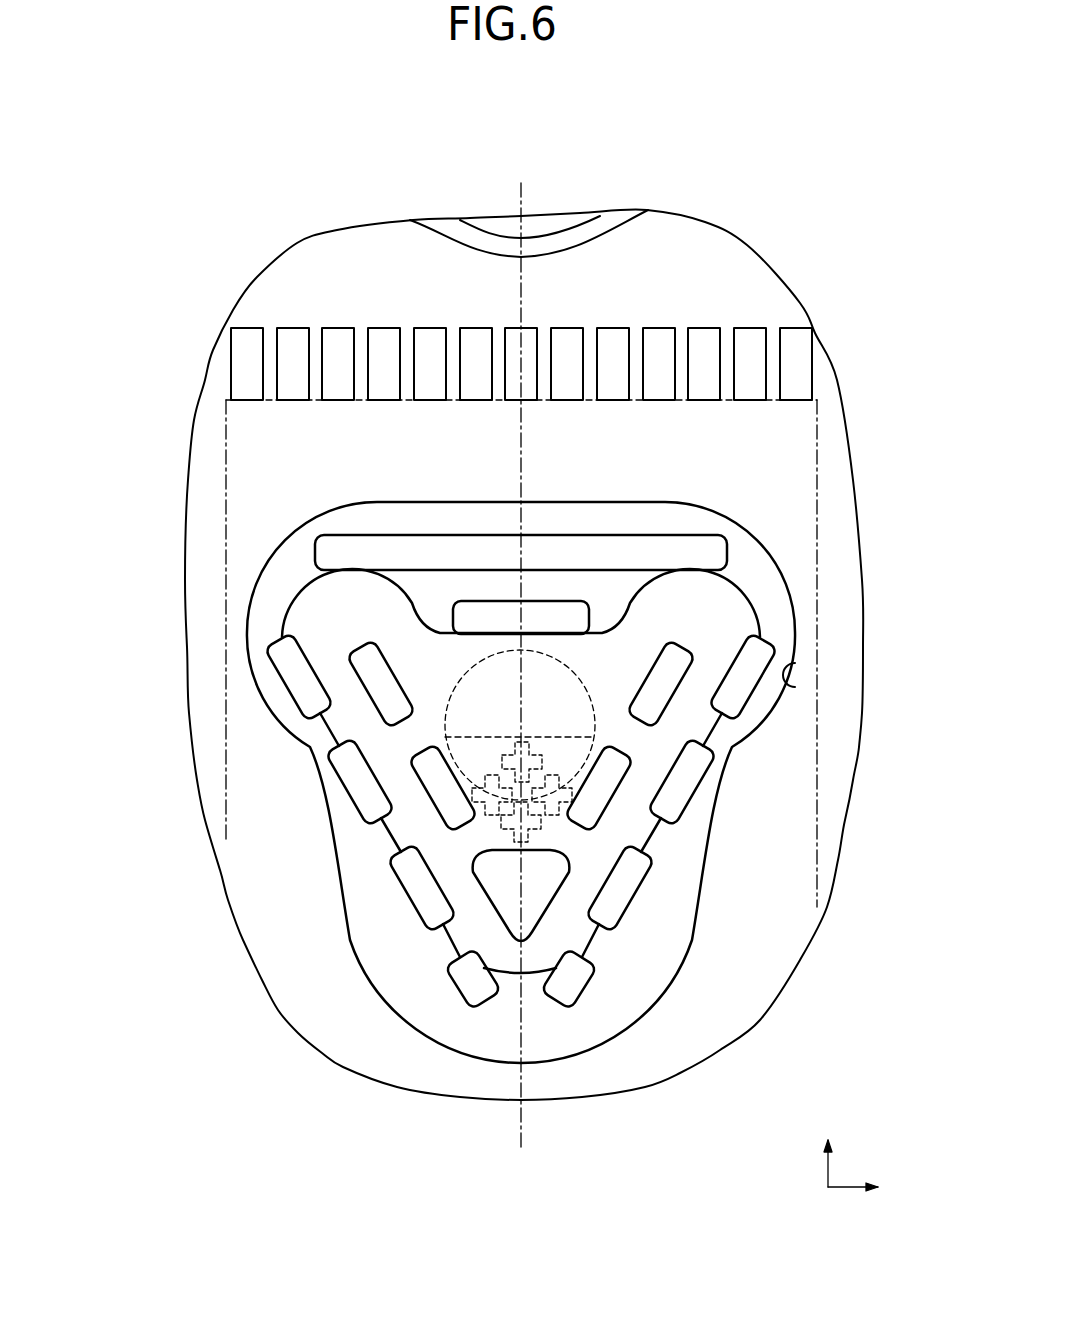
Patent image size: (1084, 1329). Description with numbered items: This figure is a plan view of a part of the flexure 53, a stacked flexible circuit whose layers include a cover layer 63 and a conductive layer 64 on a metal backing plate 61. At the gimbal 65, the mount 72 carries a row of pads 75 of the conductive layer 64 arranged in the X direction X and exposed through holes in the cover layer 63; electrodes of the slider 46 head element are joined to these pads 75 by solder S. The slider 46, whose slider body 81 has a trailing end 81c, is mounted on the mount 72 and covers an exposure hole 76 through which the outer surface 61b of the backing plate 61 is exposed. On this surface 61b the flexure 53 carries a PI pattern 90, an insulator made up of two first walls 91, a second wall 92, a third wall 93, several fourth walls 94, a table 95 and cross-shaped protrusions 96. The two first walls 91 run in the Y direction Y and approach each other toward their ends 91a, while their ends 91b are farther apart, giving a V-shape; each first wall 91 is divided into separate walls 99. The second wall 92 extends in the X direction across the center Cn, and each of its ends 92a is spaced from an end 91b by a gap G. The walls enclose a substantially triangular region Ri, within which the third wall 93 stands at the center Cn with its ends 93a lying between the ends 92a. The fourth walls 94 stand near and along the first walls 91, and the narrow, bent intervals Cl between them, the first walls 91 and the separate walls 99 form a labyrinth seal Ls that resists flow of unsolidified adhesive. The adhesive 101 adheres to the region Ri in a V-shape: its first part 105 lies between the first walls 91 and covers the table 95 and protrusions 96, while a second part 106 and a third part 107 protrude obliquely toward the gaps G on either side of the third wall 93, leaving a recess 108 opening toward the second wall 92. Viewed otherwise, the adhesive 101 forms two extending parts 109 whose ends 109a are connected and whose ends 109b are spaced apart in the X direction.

The flexure 53 is at (181, 131).
The conductive layer 64 is at (292, 345).
The pads 75 is at (522, 285).
The solder S is at (522, 285).
The trailing end 81c is at (405, 400).
The ends of the third wall 93a is at (438, 619).
The third wall 93 is at (493, 622).
The second wall 92 is at (581, 548).
The cover layer 63 is at (524, 638).
The gimbal 65 is at (524, 638).
The mount 72 is at (725, 263).
The recess 108 is at (362, 510).
The adhesive 101 is at (573, 673).
The first part 105 is at (505, 838).
The region Ri is at (431, 696).
The end of the second wall 92a is at (345, 537).
The third part 107 is at (340, 575).
The gap G is at (277, 566).
The second part 106 is at (760, 625).
The end of the extending part 109b is at (330, 622).
The end of the first wall 91b is at (278, 640).
The extending parts 109 is at (320, 645).
The separate walls 99 is at (303, 683).
The exposure hole 76 is at (796, 655).
The slider 46 is at (451, 653).
The slider body 81 is at (226, 657).
The fourth walls 94 is at (430, 785).
The table 95 is at (480, 790).
The interval Cl is at (462, 837).
The labyrinth seal Ls is at (408, 906).
The first walls 91 is at (437, 925).
The PI pattern 90 is at (460, 1004).
The end of the first wall 91a is at (490, 974).
The end of the extending part 109a is at (548, 1000).
The protrusions 96 is at (548, 802).
The backing plate 61 is at (746, 1022).
The surface 61b is at (670, 950).
The center Cn is at (528, 1150).
The X direction X is at (856, 1156).
The Y direction Y is at (856, 1156).